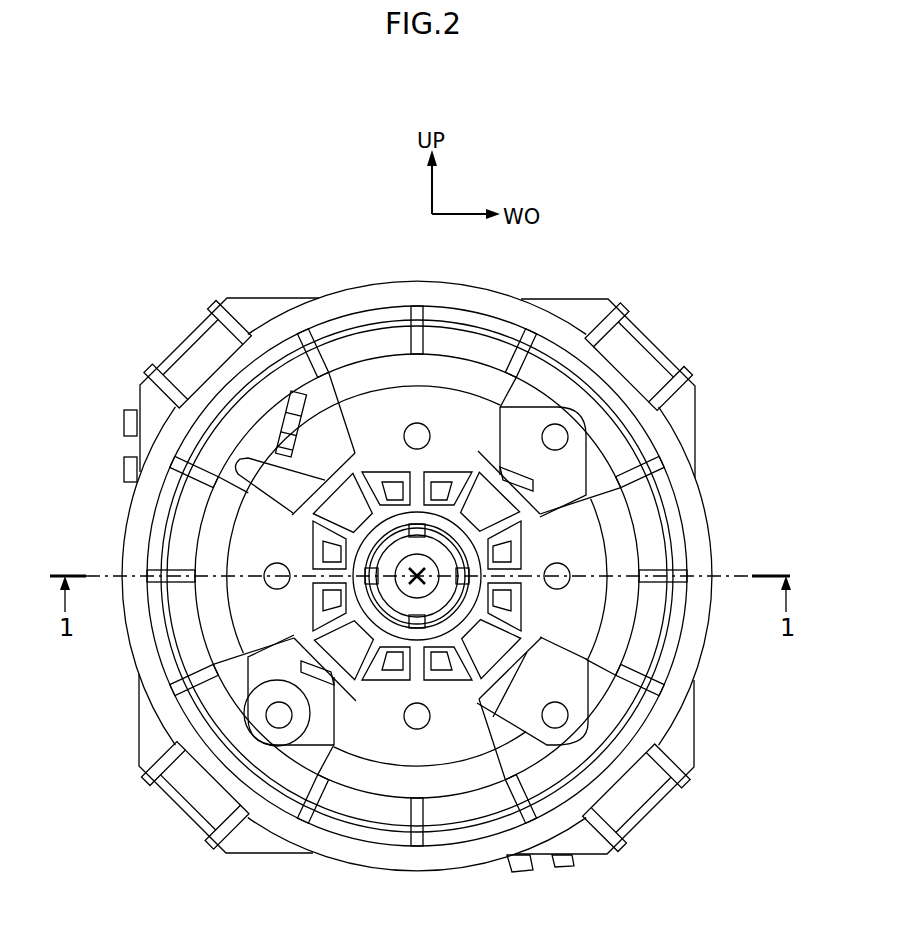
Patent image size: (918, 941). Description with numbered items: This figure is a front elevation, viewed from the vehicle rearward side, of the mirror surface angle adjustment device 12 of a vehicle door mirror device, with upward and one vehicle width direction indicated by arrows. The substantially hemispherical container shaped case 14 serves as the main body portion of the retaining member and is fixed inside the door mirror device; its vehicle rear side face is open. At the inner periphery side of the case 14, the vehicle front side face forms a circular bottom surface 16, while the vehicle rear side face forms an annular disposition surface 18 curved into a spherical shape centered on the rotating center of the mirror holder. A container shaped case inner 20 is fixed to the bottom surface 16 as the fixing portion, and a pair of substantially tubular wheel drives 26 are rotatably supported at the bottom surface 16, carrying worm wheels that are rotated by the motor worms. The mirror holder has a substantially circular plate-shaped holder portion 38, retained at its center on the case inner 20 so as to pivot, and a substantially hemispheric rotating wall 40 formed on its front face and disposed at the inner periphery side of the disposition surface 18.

The mirror surface angle adjustment device 12 is at (138, 283).
The case 14 is at (341, 352).
The bottom surface 16 is at (598, 465).
The disposition surface 18 is at (452, 340).
The case inner 20 is at (307, 740).
The wheel drive 26 is at (117, 547).
The holder portion 38 is at (697, 530).
The rotating wall 40 is at (160, 640).